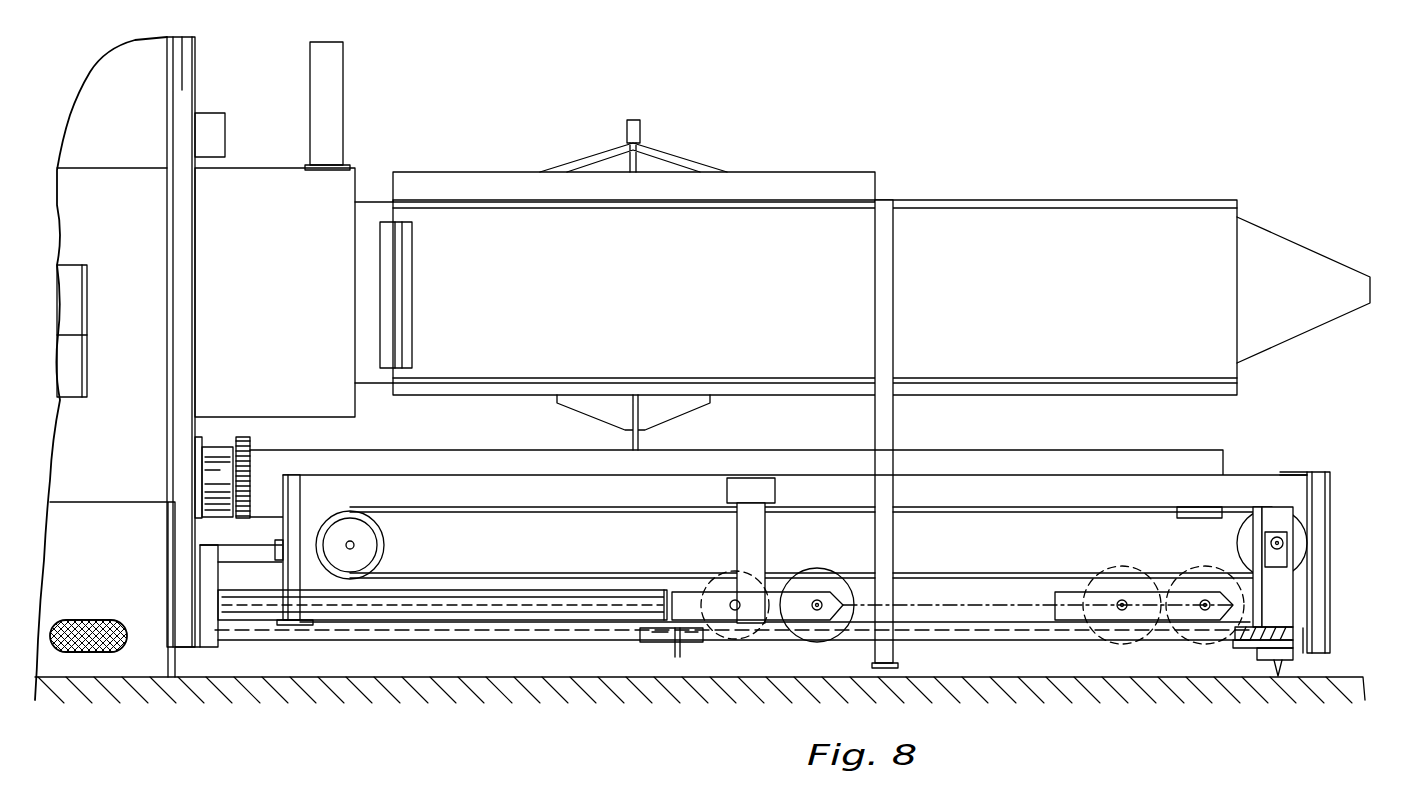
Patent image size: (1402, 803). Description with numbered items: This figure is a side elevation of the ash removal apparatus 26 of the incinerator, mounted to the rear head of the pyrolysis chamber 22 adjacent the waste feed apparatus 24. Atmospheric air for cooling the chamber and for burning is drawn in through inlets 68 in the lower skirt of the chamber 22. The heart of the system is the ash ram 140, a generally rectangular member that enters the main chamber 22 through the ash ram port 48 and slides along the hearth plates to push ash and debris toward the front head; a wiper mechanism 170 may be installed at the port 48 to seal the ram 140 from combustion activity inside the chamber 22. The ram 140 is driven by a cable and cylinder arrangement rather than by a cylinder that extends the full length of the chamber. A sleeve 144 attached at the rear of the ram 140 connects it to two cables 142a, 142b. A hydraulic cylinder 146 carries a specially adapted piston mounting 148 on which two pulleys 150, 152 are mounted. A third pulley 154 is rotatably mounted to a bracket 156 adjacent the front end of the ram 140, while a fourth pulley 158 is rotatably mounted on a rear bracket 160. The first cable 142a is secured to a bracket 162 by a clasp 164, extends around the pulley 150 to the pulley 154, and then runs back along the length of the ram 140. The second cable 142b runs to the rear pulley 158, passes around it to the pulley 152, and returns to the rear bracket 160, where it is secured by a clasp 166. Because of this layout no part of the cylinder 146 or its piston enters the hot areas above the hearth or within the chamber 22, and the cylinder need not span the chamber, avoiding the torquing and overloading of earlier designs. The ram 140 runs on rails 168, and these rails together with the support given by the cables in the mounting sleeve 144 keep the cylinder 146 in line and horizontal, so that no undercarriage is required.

The pyrolysis chamber 22 is at (138, 447).
The waste feed apparatus 24 is at (733, 170).
The ash removal apparatus 26 is at (1336, 581).
The ash ram port 48 is at (217, 447).
The inlets 68 is at (120, 622).
The ash ram 140 is at (297, 478).
The cable 142a is at (1040, 520).
The cable 142b is at (960, 566).
The sleeve 144 is at (1200, 543).
The hydraulic cylinder 146 is at (452, 612).
The piston mounting 148 is at (795, 615).
The pulley 150 is at (725, 580).
The pulley 152 is at (815, 575).
The third pulley 154 is at (382, 548).
The bracket 156 is at (320, 525).
The fourth pulley 158 is at (1300, 523).
The rear bracket 160 is at (1283, 608).
The bracket 162 is at (1010, 648).
The clasp 164 is at (672, 650).
The clasp 166 is at (1307, 663).
The rails 168 is at (1248, 475).
The wiper mechanism 170 is at (253, 448).